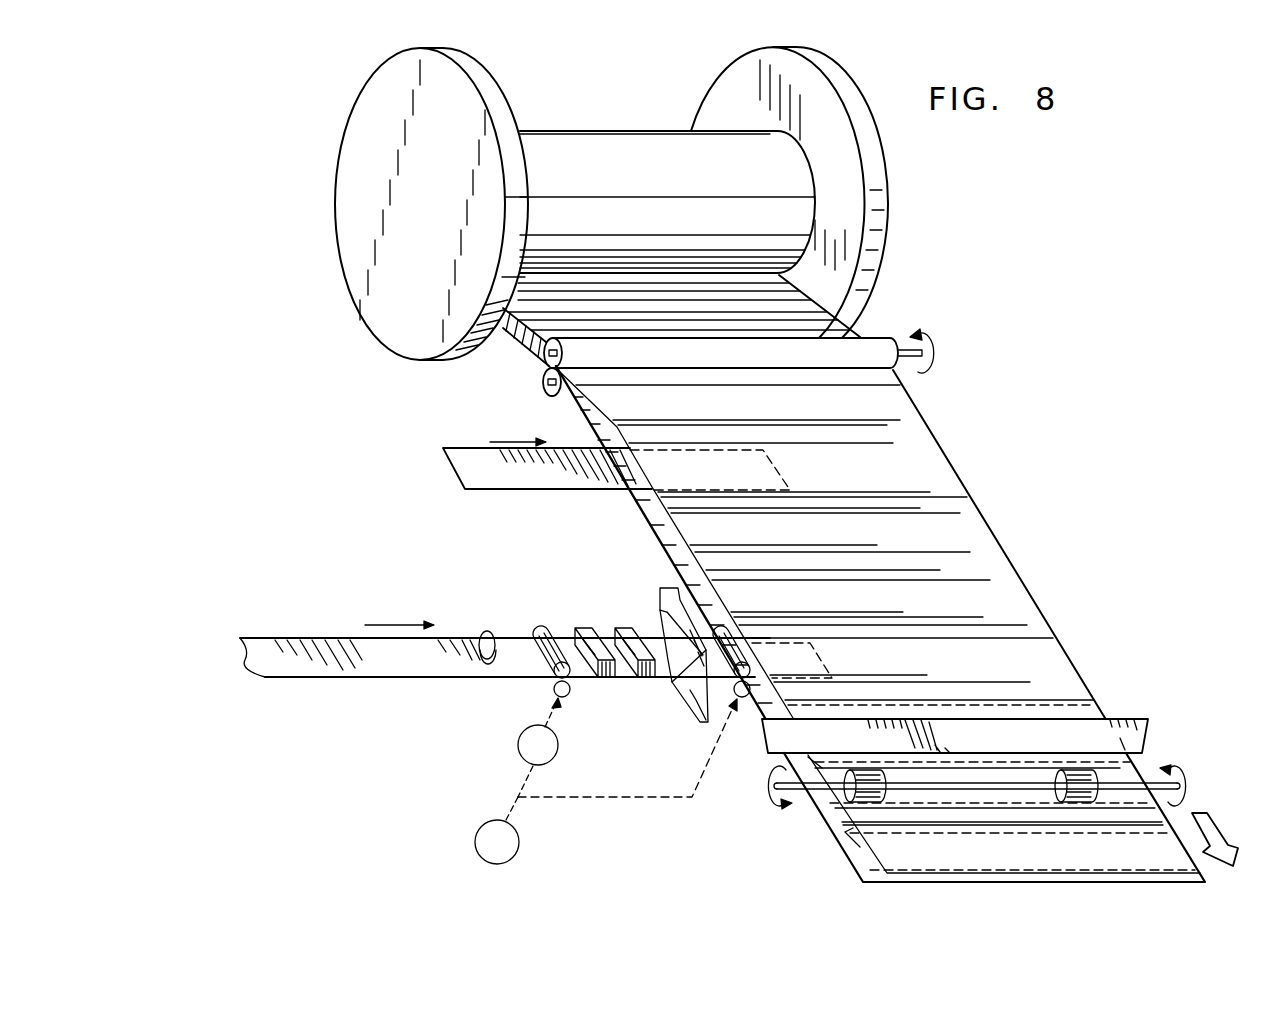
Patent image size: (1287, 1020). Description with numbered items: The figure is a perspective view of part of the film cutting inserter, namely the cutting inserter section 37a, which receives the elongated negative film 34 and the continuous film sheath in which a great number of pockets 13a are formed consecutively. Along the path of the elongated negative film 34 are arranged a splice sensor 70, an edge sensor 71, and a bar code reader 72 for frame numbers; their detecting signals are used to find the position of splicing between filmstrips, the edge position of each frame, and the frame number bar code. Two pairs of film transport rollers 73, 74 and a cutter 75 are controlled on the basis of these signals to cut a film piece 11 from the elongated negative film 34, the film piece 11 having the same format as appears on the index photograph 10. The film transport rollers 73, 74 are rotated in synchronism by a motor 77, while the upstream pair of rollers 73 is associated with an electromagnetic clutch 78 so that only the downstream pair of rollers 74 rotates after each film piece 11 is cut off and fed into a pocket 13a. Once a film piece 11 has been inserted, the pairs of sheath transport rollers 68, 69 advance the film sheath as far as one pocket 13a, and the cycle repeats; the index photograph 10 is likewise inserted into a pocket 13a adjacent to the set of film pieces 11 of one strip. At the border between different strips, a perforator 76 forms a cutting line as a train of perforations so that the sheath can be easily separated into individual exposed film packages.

The index photograph 10 is at (463, 460).
The film piece 11 is at (850, 846).
The pocket 13a is at (940, 476).
The elongated negative film 34 is at (302, 640).
The cutting inserter section 37a is at (700, 802).
The sheath transport rollers 68 is at (883, 336).
The sheath transport rollers 69 is at (1080, 802).
The splice sensor 70 is at (488, 632).
The edge sensor 71 is at (587, 627).
The bar code reader 72 is at (630, 627).
The film transport rollers 73 is at (575, 696).
The film transport rollers 74 is at (742, 700).
The cutter 75 is at (692, 708).
The perforator 76 is at (1128, 719).
The motor 77 is at (520, 843).
The electromagnetic clutch 78 is at (517, 745).